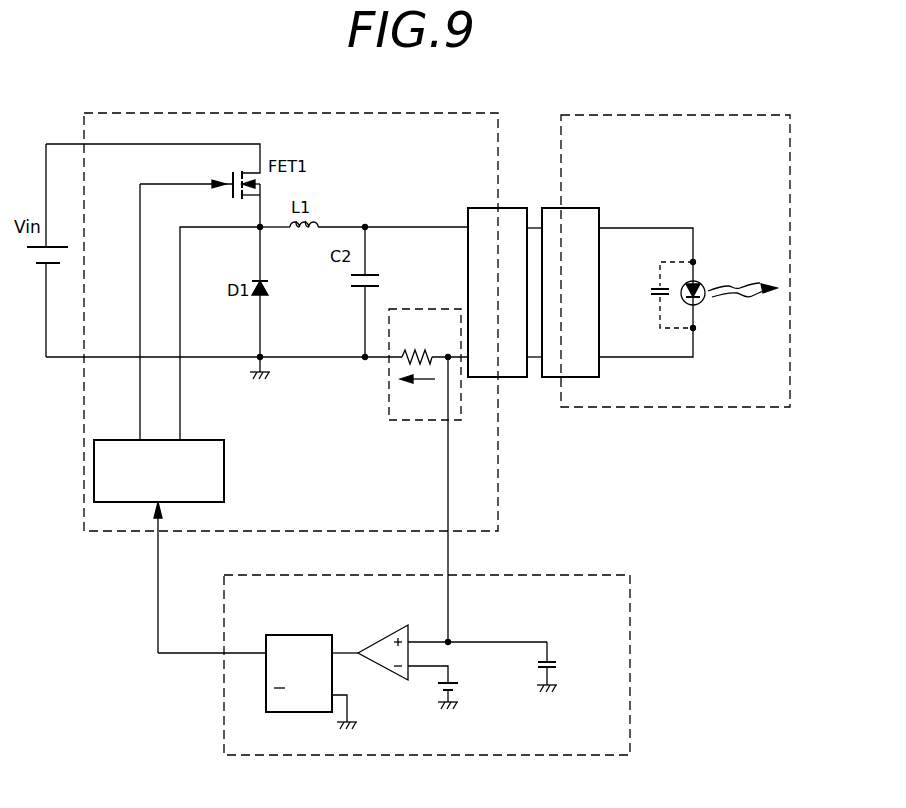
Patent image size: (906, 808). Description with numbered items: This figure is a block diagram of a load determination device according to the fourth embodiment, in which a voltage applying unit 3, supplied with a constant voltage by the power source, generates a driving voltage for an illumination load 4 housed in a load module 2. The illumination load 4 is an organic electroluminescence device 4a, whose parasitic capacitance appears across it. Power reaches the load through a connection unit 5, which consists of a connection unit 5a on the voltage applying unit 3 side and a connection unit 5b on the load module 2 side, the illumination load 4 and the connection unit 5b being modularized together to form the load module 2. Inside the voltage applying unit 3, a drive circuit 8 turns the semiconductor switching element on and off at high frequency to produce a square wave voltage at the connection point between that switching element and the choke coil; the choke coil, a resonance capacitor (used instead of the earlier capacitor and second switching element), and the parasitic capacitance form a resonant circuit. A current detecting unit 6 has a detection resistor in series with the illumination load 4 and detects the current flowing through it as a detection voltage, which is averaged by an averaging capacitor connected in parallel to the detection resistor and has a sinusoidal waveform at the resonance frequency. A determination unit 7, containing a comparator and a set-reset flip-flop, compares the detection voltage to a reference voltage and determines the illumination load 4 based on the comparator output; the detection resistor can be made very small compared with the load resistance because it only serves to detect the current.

The load module 2 is at (722, 115).
The voltage applying unit 3 is at (458, 113).
The illumination load 4 is at (716, 248).
The organic electroluminescence device 4a is at (703, 299).
The connection unit 5 is at (533, 353).
The connection unit at the voltage applying unit side 5a is at (510, 377).
The connection unit at the load module side 5b is at (573, 377).
The current detecting unit 6 is at (426, 309).
The determination unit 7 is at (631, 612).
The drive circuit 8 is at (190, 440).